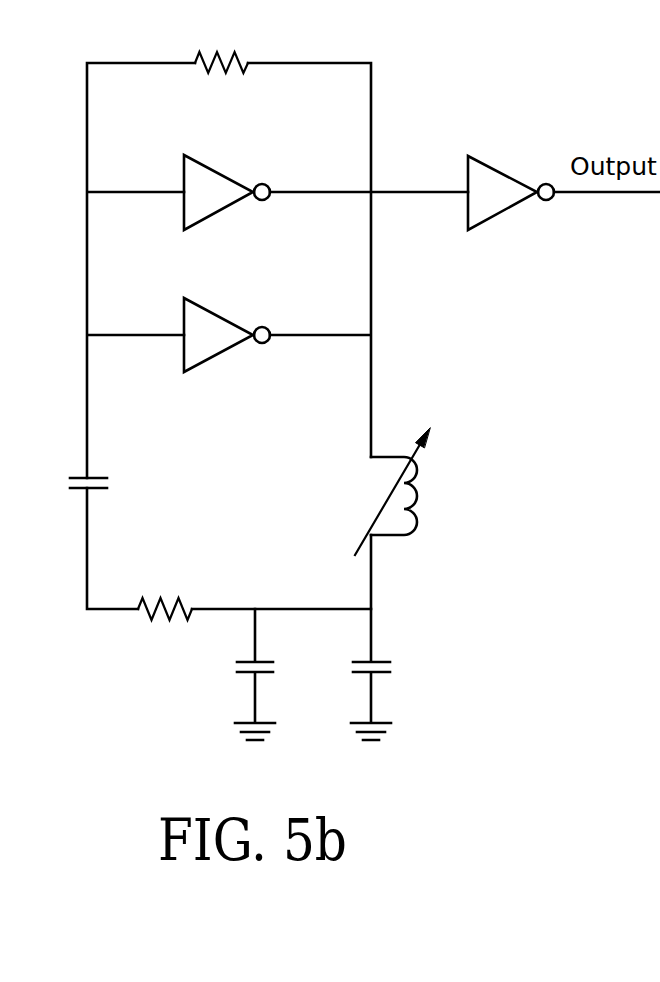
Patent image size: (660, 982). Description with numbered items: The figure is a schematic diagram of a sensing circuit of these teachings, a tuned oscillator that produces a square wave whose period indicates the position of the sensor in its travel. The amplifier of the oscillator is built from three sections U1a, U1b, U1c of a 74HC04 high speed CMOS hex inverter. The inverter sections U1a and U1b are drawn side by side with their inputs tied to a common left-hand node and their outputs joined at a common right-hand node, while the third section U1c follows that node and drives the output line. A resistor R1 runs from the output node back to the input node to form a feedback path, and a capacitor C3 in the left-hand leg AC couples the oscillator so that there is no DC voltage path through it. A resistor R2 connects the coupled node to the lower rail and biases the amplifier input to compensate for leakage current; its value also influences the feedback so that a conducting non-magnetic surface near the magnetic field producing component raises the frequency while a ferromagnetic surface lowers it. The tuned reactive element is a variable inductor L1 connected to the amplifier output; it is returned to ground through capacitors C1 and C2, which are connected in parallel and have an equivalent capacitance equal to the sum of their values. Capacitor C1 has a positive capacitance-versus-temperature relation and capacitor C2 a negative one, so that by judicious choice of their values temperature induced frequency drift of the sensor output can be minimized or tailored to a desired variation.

The resistor R1 is at (221, 45).
The resistor R2 is at (165, 592).
The capacitor C1 is at (392, 674).
The capacitor C2 is at (275, 674).
The capacitor C3 is at (110, 483).
The variable inductor L1 is at (406, 491).
The inverter section U1a is at (227, 204).
The inverter section U1b is at (227, 347).
The inverter section U1c is at (511, 204).